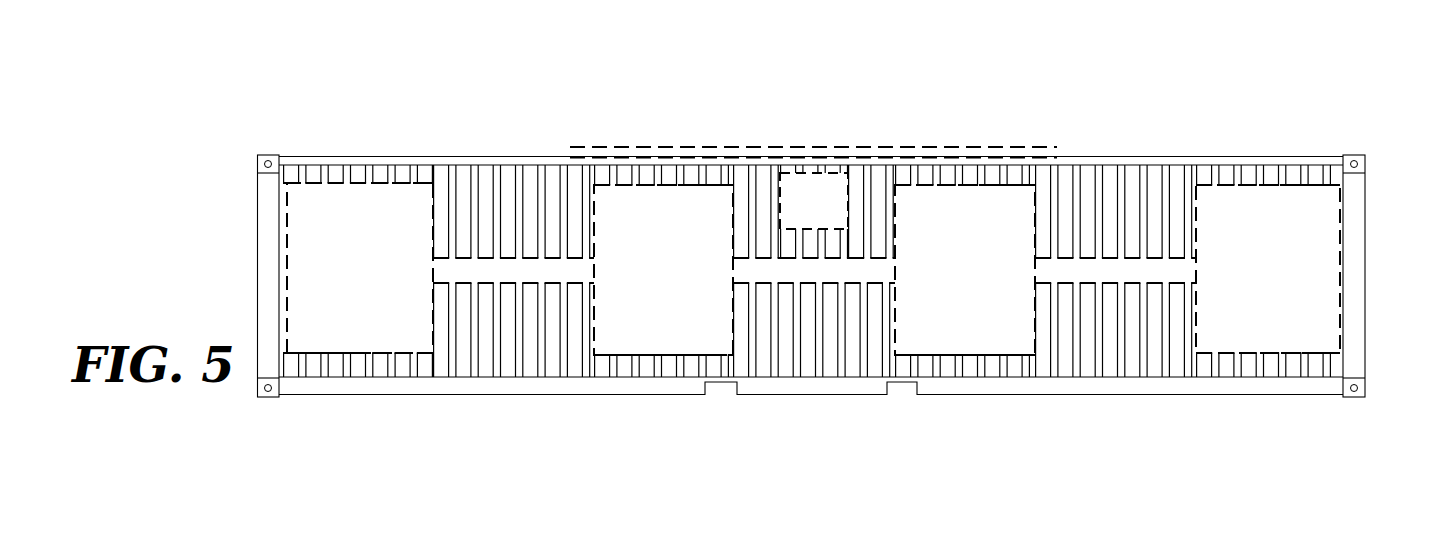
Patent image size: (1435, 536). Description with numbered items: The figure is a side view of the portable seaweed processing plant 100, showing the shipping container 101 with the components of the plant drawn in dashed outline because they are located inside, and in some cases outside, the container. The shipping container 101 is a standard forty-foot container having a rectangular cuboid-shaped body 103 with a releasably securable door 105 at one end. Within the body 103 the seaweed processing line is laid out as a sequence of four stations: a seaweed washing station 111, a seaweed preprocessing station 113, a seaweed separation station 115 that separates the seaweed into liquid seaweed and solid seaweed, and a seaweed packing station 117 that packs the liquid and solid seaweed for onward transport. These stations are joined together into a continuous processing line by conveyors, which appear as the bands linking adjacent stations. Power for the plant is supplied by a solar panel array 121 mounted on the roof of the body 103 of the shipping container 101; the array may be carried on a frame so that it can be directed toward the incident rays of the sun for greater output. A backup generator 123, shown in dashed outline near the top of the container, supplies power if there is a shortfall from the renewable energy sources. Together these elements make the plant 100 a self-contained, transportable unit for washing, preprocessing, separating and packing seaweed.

The portable seaweed processing plant 100 is at (352, 80).
The shipping container 101 is at (1296, 124).
The body 103 is at (1184, 157).
The door 105 is at (258, 235).
The seaweed washing station 111 is at (379, 284).
The seaweed preprocessing station 113 is at (683, 284).
The seaweed separation station 115 is at (985, 284).
The seaweed packing station 117 is at (1287, 284).
The solar panel array 121 is at (653, 147).
The backup generator 123 is at (813, 202).